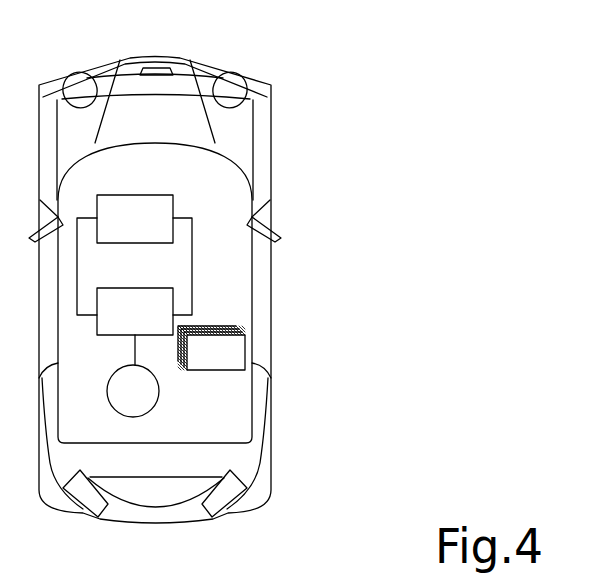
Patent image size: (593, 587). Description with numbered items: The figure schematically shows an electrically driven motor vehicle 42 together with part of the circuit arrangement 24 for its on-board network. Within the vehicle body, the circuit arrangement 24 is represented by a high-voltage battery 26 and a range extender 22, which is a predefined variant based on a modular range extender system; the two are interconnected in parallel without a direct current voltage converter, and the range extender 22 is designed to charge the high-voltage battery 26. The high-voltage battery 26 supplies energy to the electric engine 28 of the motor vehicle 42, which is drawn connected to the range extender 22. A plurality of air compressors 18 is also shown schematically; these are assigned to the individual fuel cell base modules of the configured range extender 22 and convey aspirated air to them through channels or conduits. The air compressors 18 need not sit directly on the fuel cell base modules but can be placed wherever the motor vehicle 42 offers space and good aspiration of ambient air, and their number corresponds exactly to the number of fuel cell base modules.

The electrically driven motor vehicle 42 is at (310, 82).
The circuit arrangement 24 is at (210, 200).
The high-voltage battery 26 is at (151, 228).
The range extender 22 is at (151, 323).
The electric engine 28 is at (149, 401).
The air compressors 18 is at (232, 363).